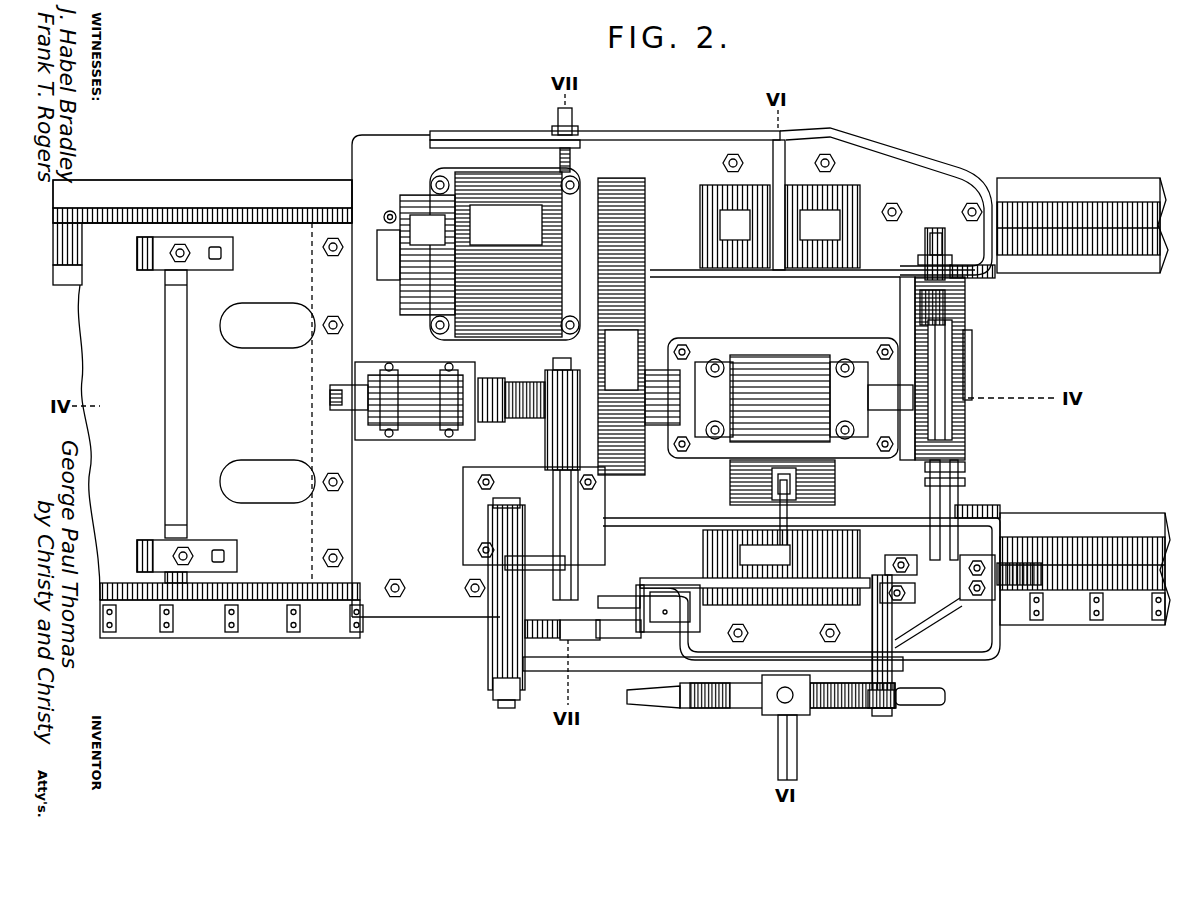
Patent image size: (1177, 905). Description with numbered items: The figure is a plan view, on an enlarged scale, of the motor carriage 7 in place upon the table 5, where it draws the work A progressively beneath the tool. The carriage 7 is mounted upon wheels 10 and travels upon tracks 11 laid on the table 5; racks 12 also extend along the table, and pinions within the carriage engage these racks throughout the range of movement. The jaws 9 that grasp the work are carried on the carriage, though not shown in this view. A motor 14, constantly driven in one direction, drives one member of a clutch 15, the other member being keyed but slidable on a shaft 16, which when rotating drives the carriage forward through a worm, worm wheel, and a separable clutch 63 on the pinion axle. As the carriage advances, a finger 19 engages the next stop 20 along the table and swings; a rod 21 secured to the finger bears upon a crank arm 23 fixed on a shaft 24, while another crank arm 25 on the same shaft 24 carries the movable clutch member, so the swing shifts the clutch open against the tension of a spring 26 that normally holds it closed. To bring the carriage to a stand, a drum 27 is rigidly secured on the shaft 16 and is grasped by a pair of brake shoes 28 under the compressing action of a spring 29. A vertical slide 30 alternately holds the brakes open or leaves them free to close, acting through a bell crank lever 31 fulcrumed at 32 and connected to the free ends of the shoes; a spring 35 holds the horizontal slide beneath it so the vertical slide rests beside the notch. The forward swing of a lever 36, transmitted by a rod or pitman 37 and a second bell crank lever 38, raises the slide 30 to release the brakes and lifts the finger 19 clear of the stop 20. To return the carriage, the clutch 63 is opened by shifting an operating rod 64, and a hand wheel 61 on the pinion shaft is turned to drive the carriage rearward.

The work A is at (80, 338).
The table 5 is at (232, 182).
The carriage 7 is at (922, 165).
The jaws 9 is at (155, 245).
The wheels 10 is at (992, 272).
The tracks 11 is at (266, 186).
The racks 12 is at (300, 212).
The motor 14 is at (477, 180).
The clutch 15 is at (640, 355).
The shaft 16 is at (972, 392).
The finger 19 is at (690, 615).
The stops 20 is at (240, 632).
The rod 21 is at (688, 578).
The crank arm 23 is at (565, 640).
The shaft 24 is at (575, 505).
The crank arm 25 is at (548, 372).
The spring 26 is at (522, 420).
The drum 27 is at (950, 372).
The brake shoes 28 is at (968, 345).
The spring 29 is at (950, 288).
The slide 30 is at (945, 600).
The bell crank lever 31 is at (955, 495).
The fulcrum 32 is at (962, 558).
The spring 35 is at (1012, 588).
The lever 36 is at (492, 650).
The rod or pitman 37 is at (612, 672).
The bell crank lever 38 is at (893, 560).
The hand wheel 61 is at (742, 698).
The clutch 63 is at (838, 466).
The operating rod 64 is at (790, 545).